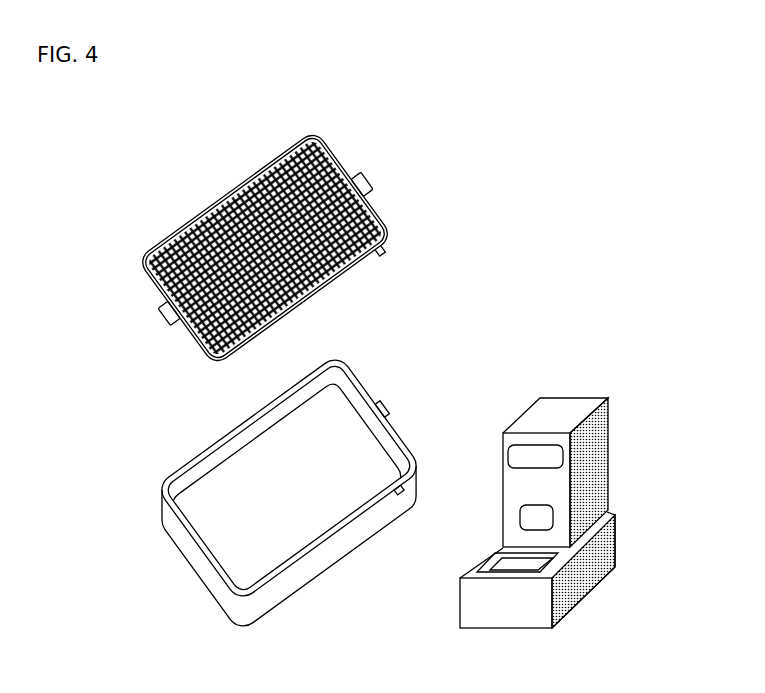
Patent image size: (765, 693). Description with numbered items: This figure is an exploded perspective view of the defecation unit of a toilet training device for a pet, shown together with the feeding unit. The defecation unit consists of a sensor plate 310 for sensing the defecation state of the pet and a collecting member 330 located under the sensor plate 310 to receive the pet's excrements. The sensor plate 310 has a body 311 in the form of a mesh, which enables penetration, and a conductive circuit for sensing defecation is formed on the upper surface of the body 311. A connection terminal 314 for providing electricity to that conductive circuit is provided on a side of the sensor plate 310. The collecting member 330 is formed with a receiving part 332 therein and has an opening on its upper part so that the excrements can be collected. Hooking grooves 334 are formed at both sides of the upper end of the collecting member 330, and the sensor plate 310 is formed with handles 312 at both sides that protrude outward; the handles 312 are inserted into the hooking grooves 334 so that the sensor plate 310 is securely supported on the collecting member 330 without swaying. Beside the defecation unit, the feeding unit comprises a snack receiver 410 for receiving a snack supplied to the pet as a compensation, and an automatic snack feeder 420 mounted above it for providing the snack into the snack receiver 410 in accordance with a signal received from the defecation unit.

The sensor plate 310 is at (169, 214).
The body 311 is at (236, 178).
The handles 312 is at (366, 167).
The connection terminal 314 is at (389, 257).
The collecting member 330 is at (197, 586).
The receiving part 332 is at (287, 485).
The hooking grooves 334 is at (388, 402).
The automatic snack feeder 420 is at (562, 410).
The snack receiver 410 is at (530, 605).